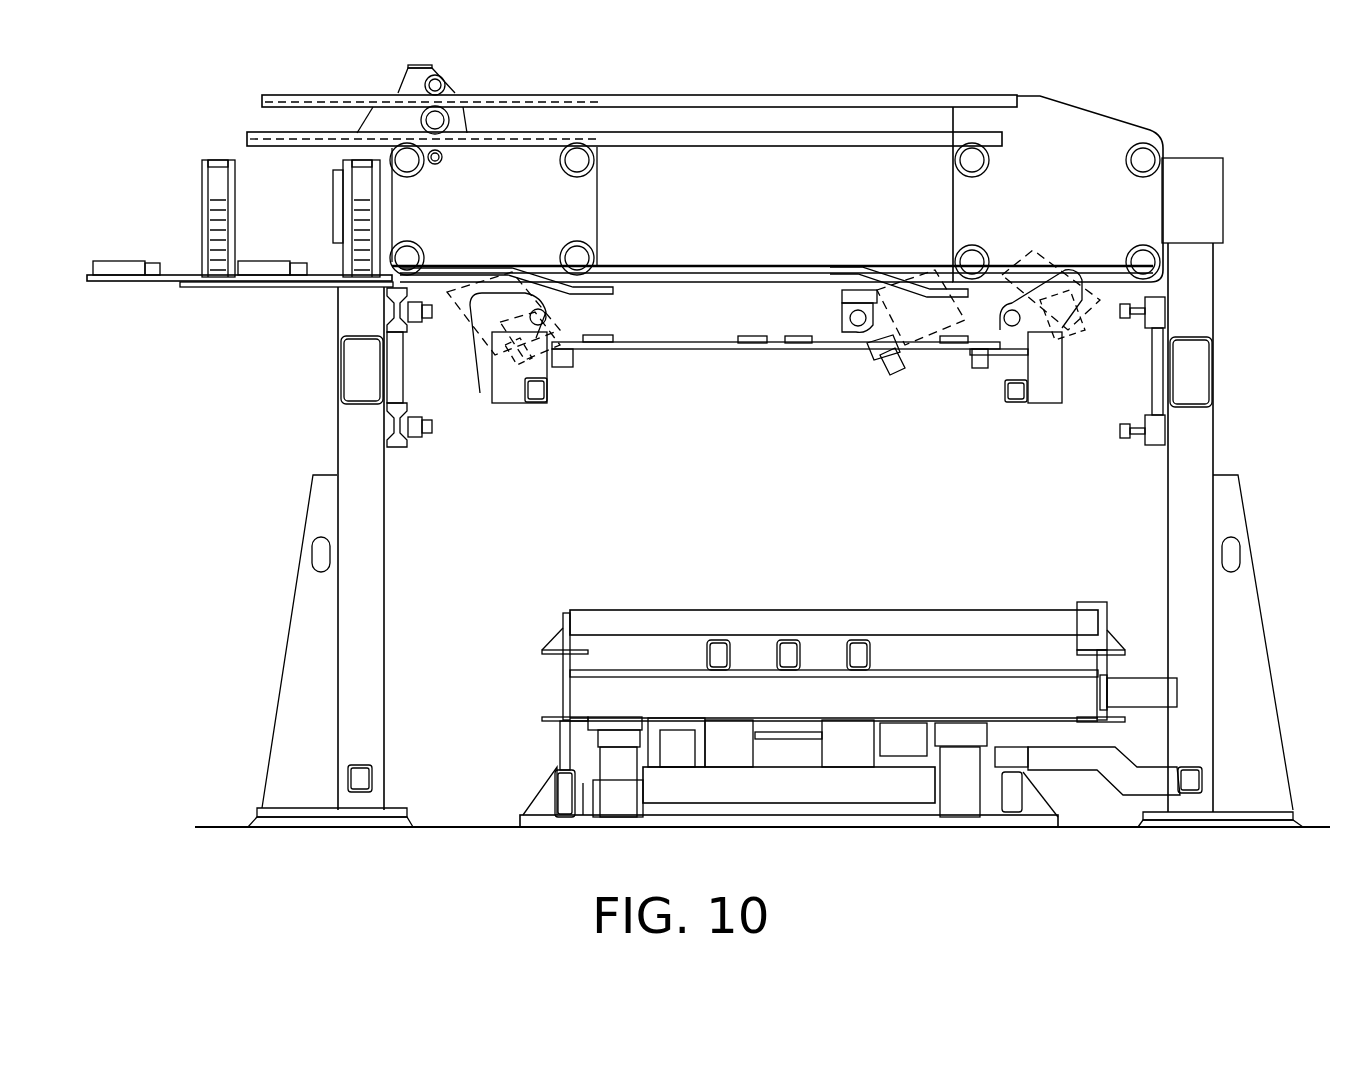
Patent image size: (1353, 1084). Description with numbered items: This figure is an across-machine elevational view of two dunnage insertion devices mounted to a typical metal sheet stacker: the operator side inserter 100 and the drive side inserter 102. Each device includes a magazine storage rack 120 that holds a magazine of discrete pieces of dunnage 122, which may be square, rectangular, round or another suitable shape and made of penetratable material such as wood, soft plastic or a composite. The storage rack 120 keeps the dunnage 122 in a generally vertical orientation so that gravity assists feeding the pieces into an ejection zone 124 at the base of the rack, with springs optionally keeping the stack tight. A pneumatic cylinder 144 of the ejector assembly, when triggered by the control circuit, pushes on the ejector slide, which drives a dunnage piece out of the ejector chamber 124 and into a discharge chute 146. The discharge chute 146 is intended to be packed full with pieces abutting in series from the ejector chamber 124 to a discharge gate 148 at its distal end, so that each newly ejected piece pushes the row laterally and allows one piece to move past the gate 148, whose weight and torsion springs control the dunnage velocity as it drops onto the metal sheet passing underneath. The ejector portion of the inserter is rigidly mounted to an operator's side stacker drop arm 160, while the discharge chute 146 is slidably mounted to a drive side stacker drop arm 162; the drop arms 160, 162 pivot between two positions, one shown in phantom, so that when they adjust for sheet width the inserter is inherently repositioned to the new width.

The operator side inserter 100 is at (198, 213).
The drive side inserter 102 is at (350, 243).
The magazine storage rack 120 is at (203, 188).
The dunnage 122 is at (218, 203).
The ejection zone 124 is at (343, 343).
The pneumatic cylinder 144 is at (112, 267).
The discharge chute 146 is at (660, 270).
The discharge gate 148 is at (605, 293).
The operator's side stacker drop arm 160 is at (480, 377).
The drive side stacker drop arm 162 is at (1067, 377).